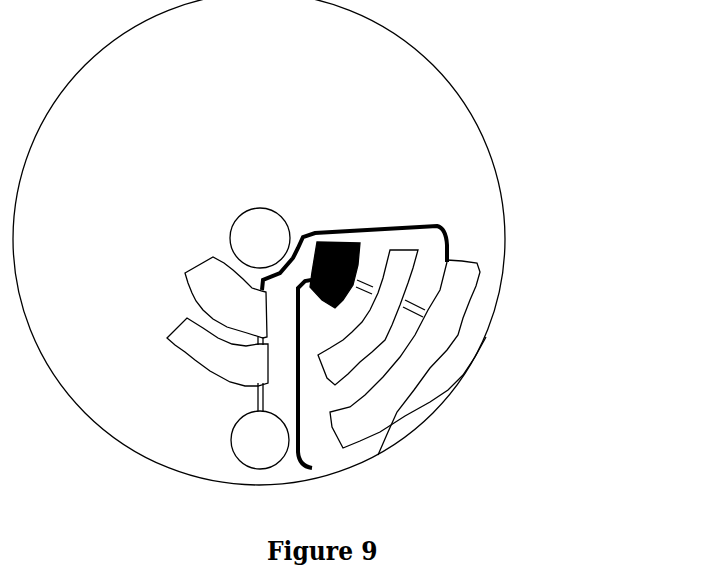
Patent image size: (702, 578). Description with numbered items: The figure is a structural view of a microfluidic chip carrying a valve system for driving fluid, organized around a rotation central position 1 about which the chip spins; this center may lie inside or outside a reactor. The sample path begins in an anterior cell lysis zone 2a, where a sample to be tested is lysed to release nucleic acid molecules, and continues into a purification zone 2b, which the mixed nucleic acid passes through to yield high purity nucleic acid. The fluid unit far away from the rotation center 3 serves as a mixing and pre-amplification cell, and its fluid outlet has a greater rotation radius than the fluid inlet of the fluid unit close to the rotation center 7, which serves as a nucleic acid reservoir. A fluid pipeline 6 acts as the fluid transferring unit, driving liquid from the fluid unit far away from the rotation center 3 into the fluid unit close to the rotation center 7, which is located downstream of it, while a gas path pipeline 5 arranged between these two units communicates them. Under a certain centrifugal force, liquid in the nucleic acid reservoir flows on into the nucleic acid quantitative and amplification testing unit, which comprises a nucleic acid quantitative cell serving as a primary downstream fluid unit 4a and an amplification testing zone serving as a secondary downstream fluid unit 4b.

The rotation central position 1 is at (261, 240).
The anterior cell lysis zone 2a is at (202, 277).
The purification zone 2b is at (202, 343).
The fluid unit far away from rotation center 3 is at (273, 442).
The primary downstream fluid unit 4a is at (410, 262).
The secondary downstream fluid unit 4b is at (453, 315).
The gas path pipeline 5 is at (388, 250).
The fluid pipeline 6 is at (278, 468).
The fluid unit close to rotation center 7 is at (334, 258).